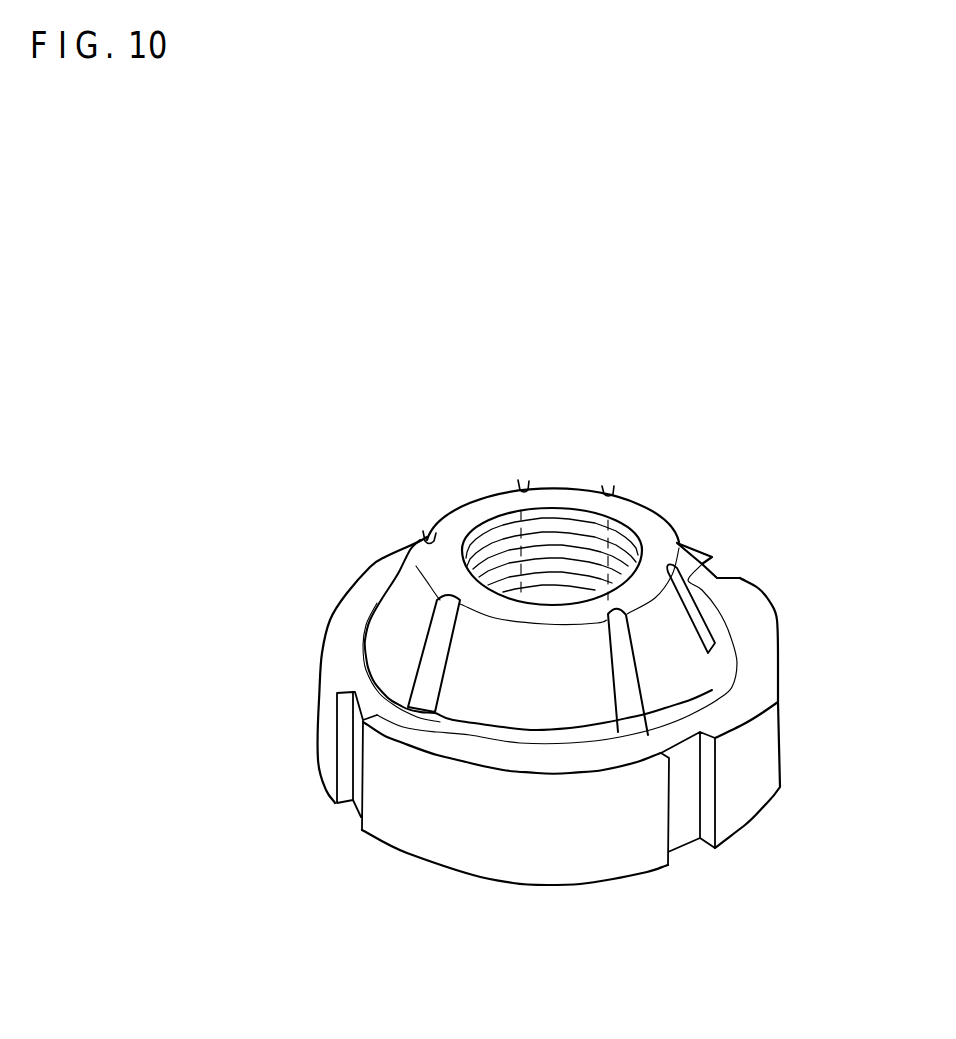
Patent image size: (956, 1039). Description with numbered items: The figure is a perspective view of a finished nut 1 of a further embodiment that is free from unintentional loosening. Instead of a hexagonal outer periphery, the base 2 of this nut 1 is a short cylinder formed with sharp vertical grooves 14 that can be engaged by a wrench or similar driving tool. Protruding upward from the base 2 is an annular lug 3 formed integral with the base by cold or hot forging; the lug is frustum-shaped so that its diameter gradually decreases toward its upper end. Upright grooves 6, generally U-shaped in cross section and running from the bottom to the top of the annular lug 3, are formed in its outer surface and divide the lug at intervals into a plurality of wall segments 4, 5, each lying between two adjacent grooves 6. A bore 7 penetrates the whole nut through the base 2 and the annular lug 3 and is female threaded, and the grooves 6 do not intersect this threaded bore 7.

The nut 1 is at (775, 618).
The base 2 is at (315, 760).
The annular lug 3 is at (382, 588).
The wall segment 4 is at (580, 476).
The wall segment 5 is at (481, 490).
The grooves 6 is at (525, 483).
The internally threaded bore 7 is at (513, 505).
The sharp vertical grooves 14 is at (337, 803).